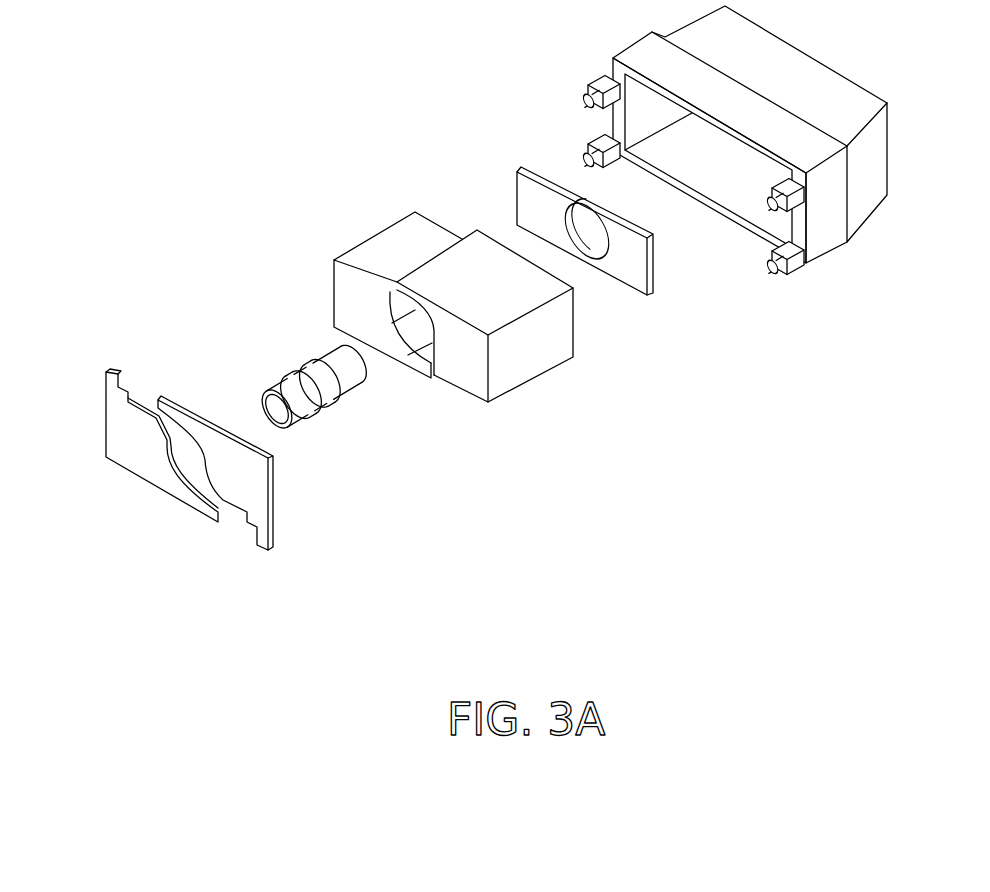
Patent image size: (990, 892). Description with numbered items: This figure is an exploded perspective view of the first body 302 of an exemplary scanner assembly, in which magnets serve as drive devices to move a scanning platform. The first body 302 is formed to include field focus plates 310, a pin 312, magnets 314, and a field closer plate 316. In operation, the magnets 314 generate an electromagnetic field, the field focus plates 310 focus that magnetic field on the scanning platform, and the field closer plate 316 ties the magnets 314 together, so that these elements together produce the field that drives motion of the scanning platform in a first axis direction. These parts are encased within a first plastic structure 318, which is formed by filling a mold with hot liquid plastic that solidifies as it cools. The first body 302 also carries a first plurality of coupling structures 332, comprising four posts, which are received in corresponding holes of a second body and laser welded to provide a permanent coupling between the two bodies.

The first body 302 is at (539, 325).
The field focus plates 310 is at (110, 368).
The pin 312 is at (303, 415).
The magnets 314 is at (398, 228).
The field closer plate 316 is at (645, 293).
The first plastic structure 318 is at (753, 172).
The first plurality of coupling structures 332 is at (592, 96).